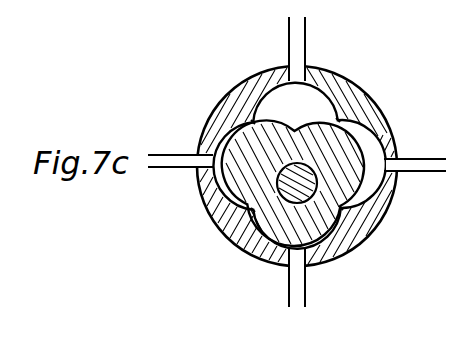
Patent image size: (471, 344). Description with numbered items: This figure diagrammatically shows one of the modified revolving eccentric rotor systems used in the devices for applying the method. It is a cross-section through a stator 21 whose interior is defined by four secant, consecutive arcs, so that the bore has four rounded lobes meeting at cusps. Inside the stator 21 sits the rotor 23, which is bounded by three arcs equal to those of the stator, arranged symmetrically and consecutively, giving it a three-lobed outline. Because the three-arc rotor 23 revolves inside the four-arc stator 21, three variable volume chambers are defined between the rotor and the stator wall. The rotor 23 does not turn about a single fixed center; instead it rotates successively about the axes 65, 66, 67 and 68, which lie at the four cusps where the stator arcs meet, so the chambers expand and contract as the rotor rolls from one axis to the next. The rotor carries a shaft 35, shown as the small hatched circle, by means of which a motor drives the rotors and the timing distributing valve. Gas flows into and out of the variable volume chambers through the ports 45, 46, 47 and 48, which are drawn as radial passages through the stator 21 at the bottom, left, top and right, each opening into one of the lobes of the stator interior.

The stator 21 is at (222, 216).
The rotor 23 is at (243, 163).
The shaft 35 is at (316, 178).
The port 45 is at (296, 283).
The port 46 is at (174, 168).
The port 47 is at (289, 42).
The port 48 is at (411, 172).
The axis 65 is at (340, 214).
The axis 66 is at (251, 215).
The axis 67 is at (254, 122).
The axis 68 is at (360, 118).